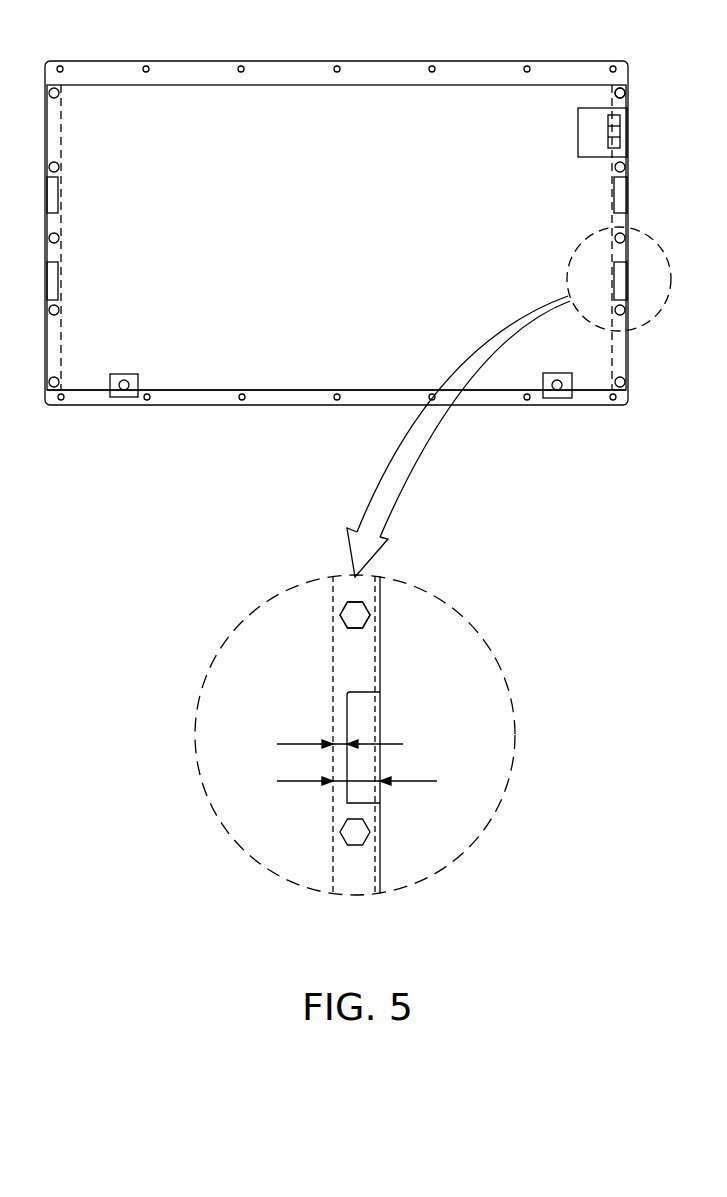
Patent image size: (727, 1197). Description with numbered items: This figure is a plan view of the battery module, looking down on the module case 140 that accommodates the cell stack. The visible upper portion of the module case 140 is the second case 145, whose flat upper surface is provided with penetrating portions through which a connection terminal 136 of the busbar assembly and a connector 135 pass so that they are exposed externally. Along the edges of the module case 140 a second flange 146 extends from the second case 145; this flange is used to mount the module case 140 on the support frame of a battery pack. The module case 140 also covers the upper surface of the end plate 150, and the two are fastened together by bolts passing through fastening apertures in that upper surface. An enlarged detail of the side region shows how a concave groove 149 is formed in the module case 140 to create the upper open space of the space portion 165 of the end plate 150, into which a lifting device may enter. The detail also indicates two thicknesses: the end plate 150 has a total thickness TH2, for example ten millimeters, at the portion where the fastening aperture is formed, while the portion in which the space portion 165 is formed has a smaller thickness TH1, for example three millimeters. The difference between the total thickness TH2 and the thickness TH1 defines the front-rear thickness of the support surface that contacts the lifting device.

The module case 140 is at (358, 291).
The second case 145 is at (430, 108).
The connector 135 is at (592, 114).
The connection terminal 136 is at (110, 381).
The second flange 146 is at (180, 398).
The concave groove 149 is at (354, 690).
The end plate 150 is at (357, 862).
The space portion 165 is at (364, 700).
The thickness of portion in which space portion is formed TH1 is at (327, 733).
The total thickness of end plate TH2 is at (344, 770).